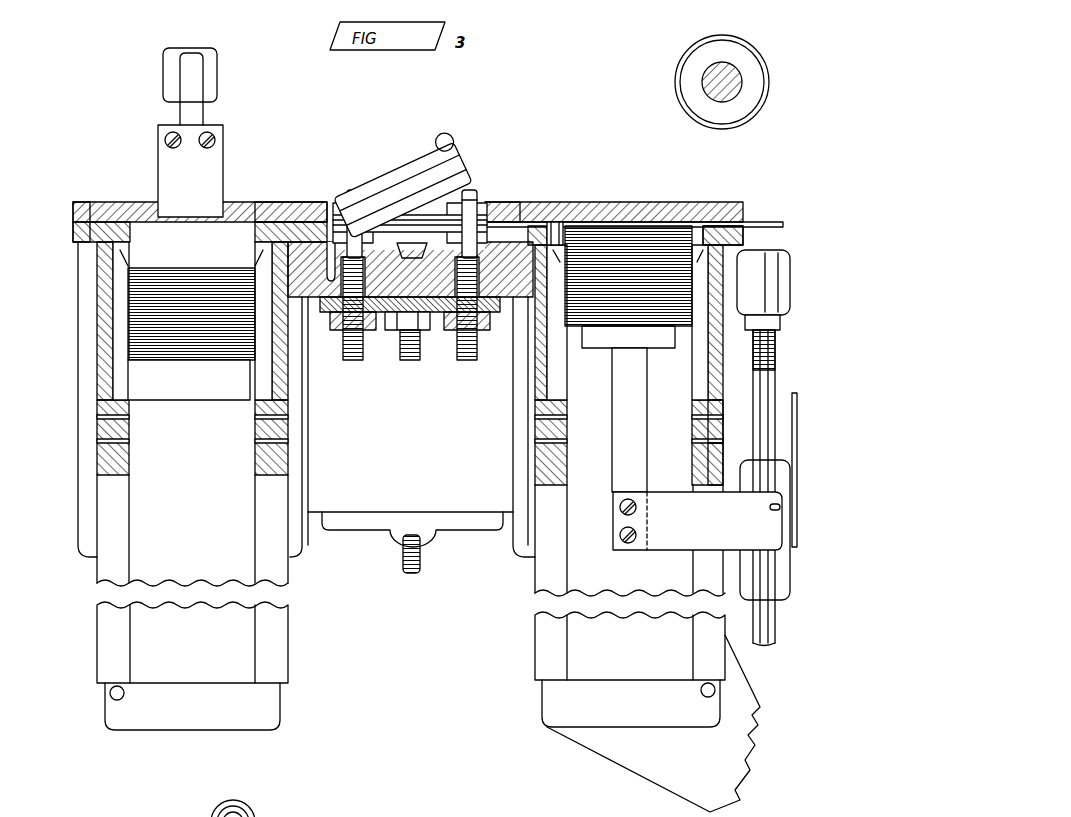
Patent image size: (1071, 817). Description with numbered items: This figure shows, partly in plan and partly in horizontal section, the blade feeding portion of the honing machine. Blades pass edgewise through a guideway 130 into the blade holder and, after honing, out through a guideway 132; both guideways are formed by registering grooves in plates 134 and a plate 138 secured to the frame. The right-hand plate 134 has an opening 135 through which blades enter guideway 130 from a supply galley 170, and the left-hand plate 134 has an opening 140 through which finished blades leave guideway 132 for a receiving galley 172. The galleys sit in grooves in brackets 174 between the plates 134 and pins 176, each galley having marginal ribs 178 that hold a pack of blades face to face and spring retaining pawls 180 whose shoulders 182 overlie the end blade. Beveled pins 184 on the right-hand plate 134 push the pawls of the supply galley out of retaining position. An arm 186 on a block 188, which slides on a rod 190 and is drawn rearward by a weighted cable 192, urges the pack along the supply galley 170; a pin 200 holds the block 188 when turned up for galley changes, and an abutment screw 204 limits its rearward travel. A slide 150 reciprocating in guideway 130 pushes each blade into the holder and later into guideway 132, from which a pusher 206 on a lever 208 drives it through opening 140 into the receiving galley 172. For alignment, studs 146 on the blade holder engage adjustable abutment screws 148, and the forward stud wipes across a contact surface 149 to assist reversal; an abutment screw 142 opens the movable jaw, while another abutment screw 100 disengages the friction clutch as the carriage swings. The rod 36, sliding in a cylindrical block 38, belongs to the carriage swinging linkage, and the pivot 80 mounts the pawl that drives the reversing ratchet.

The cylindrical block 38 is at (688, 77).
The rod 36 is at (705, 95).
The pawl pivot 80 is at (252, 812).
The adjustable abutment screw 100 is at (402, 575).
The guideway 130 is at (560, 250).
The guideway 132 is at (285, 207).
The plate 134 is at (73, 238).
The opening 135 is at (687, 240).
The plate 138 is at (133, 207).
The opening 140 is at (235, 227).
The abutment screw 142 is at (412, 362).
The laterally projecting stud 146 is at (368, 160).
The adjustable abutment screw 148 is at (352, 362).
The contact surface 149 is at (378, 246).
The slide 150 is at (758, 222).
The supply galley 170 is at (577, 558).
The receiving galley 172 is at (240, 566).
The bracket 174 is at (305, 548).
The pin 176 is at (113, 698).
The marginal rib 178 is at (105, 640).
The spring retaining pawl 180 is at (250, 380).
The shoulder 182 is at (245, 262).
The beveled pin 184 is at (567, 247).
The arm 186 is at (620, 393).
The block 188 is at (673, 540).
The rod 190 is at (700, 422).
The cable 192 is at (700, 453).
The pin 200 is at (783, 507).
The abutment screw 204 is at (760, 373).
The pusher 206 is at (215, 157).
The lever 208 is at (205, 112).